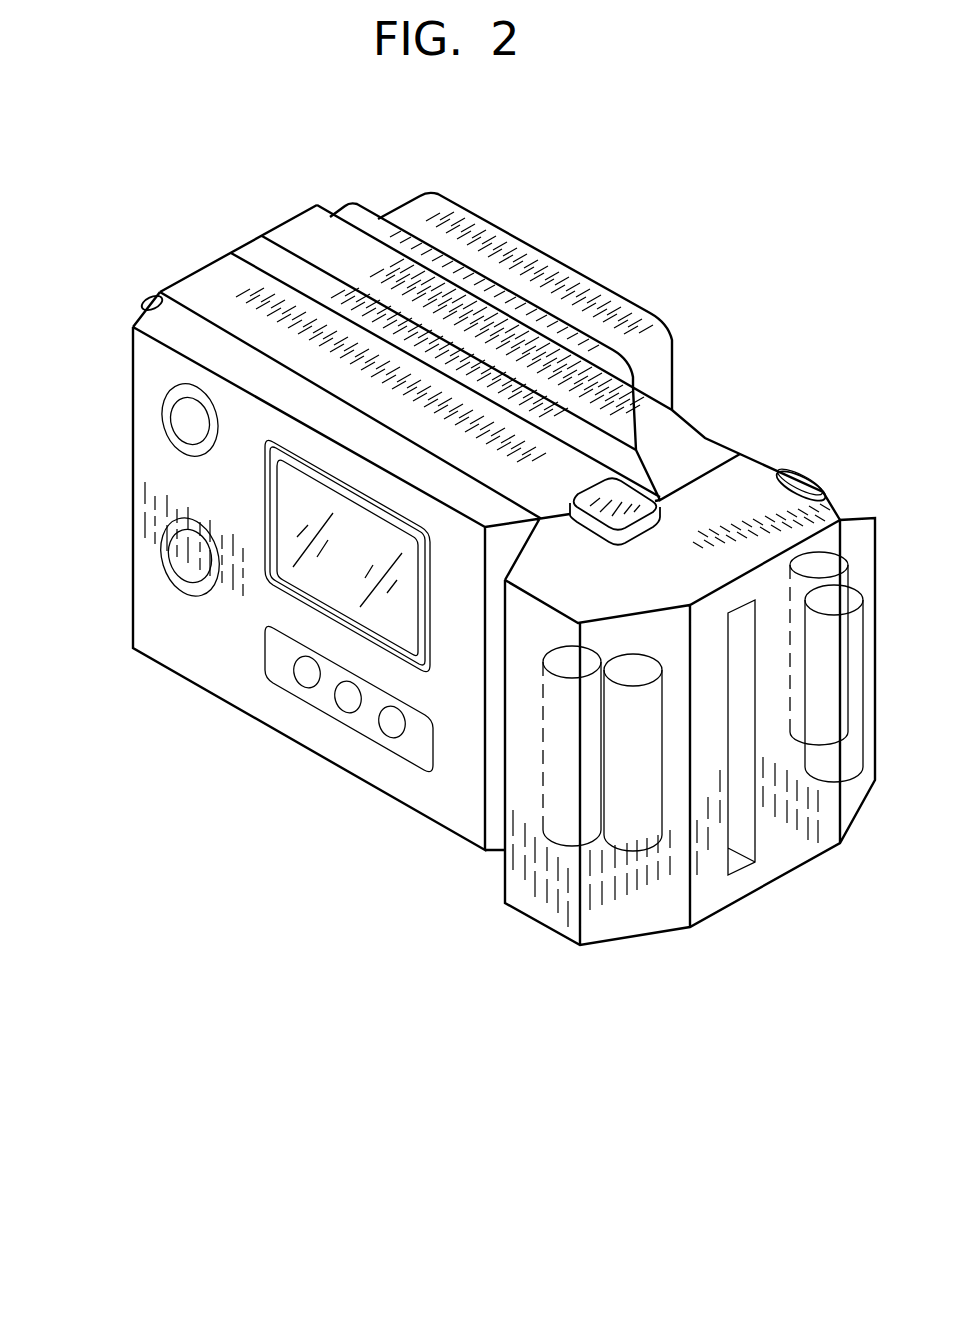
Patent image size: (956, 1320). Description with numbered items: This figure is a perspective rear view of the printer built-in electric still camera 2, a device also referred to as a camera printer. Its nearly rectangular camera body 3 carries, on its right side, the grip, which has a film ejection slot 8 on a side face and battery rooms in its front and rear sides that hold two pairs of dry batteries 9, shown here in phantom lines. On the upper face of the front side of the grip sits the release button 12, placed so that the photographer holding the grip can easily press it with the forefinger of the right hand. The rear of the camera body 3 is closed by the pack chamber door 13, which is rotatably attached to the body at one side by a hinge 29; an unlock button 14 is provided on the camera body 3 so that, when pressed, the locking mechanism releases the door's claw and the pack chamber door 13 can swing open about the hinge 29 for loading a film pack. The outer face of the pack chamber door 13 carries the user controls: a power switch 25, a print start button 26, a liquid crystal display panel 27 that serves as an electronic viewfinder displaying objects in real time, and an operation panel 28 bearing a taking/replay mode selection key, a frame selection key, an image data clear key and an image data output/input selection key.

The printer built-in electric still camera 2 is at (415, 1032).
The camera body 3 is at (190, 245).
The film ejection slot 8 is at (740, 880).
The dry batteries 9 is at (628, 940).
The release button 12 is at (800, 478).
The pack chamber door 13 is at (113, 366).
The unlock button 14 is at (613, 500).
The power switch 25 is at (188, 424).
The print start button 26 is at (188, 557).
The liquid crystal display panel 27 is at (317, 480).
The operation panel 28 is at (372, 727).
The hinge 29 is at (147, 298).